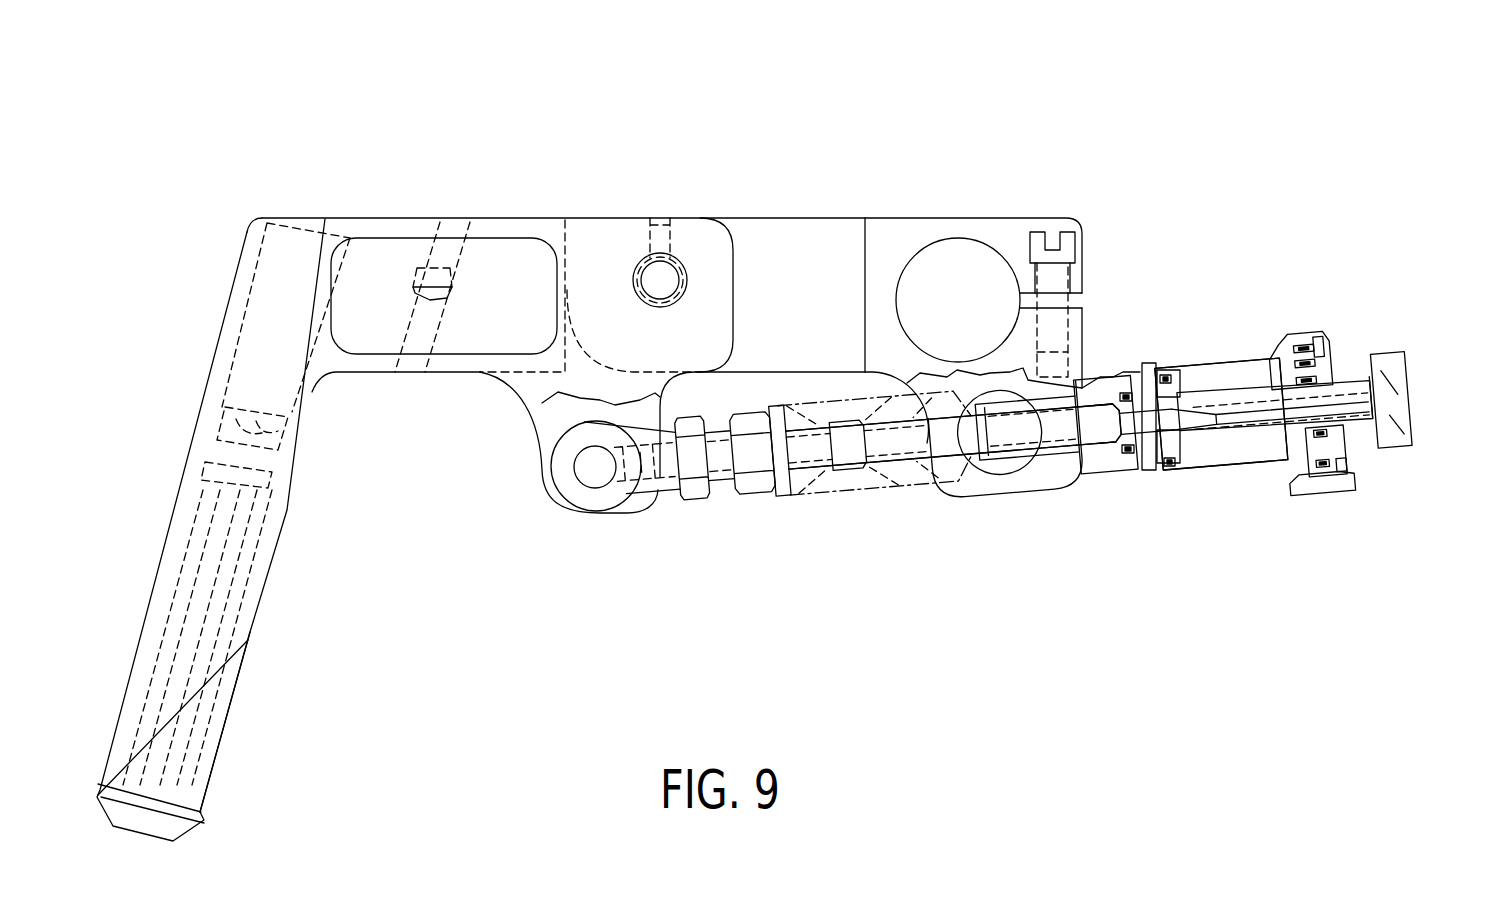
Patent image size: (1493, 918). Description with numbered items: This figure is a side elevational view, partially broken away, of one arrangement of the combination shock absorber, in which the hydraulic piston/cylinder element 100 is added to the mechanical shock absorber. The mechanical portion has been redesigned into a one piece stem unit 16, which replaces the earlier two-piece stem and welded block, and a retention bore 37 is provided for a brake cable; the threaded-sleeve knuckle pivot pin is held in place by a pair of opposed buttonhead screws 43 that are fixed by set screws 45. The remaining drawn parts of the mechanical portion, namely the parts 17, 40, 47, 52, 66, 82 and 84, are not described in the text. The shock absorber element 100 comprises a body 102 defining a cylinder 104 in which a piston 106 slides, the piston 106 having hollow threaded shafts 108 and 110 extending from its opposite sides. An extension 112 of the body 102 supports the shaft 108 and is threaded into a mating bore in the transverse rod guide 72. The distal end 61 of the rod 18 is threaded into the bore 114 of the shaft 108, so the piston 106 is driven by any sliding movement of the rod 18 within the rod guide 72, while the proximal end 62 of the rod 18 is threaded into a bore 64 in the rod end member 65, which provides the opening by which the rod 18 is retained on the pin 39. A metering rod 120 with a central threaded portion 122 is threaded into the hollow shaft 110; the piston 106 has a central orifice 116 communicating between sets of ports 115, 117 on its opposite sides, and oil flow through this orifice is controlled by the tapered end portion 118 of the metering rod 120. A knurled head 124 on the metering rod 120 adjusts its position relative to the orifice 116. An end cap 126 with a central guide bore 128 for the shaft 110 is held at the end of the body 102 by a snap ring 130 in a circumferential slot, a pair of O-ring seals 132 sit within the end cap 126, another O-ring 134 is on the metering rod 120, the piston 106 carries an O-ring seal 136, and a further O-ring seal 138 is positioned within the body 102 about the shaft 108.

The one piece stem unit 16 is at (180, 483).
The rod 17 is at (833, 497).
The rod 18 is at (860, 513).
The retention bore 37 is at (418, 262).
The pin 39 is at (577, 490).
The body 40 is at (795, 218).
The buttonhead screws 43 is at (675, 272).
The set screws 45 is at (655, 218).
The clamp screw 47 is at (1055, 240).
The bore 52 is at (970, 252).
The distal end of the rod 61 is at (1023, 462).
The proximal end of the rod 62 is at (667, 490).
The bore in the rod end member 64 is at (660, 436).
The rod end member 65 is at (551, 470).
The nut 66 is at (753, 497).
The transverse rod guide 72 is at (973, 480).
The lever 82 is at (227, 733).
The nut 84 is at (258, 407).
The hydraulic piston/cylinder element 100 is at (1233, 540).
The body 102 is at (1235, 468).
The cylinder 104 is at (1243, 450).
The piston 106 is at (1130, 472).
The hollow threaded shaft 108 is at (1095, 467).
The hollow threaded shaft 110 is at (1270, 400).
The extension of the body 112 is at (1060, 440).
The bore of the shaft 114 is at (1103, 404).
The ports 115 is at (1150, 365).
The central orifice 116 is at (1149, 363).
The ports 117 is at (1172, 407).
The tapered end portion 118 is at (1188, 403).
The metering rod 120 is at (1345, 405).
The central threaded portion 122 is at (1273, 357).
The knurled head 124 is at (1407, 365).
The end cap 126 is at (1317, 450).
The central guide bore 128 is at (1350, 345).
The snap ring 130 is at (1340, 352).
The O-ring seals 132 is at (1317, 433).
The O-ring 134 is at (1296, 345).
The O-ring seal 136 is at (1165, 462).
The O-ring seal 138 is at (1125, 455).